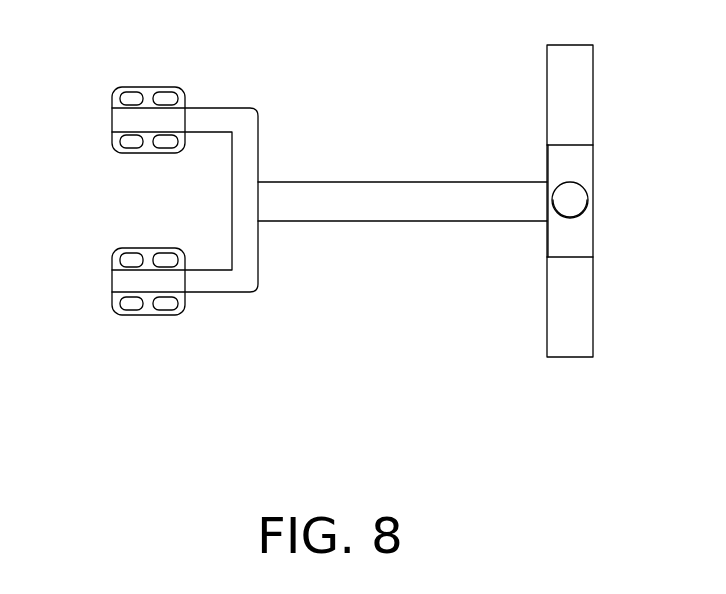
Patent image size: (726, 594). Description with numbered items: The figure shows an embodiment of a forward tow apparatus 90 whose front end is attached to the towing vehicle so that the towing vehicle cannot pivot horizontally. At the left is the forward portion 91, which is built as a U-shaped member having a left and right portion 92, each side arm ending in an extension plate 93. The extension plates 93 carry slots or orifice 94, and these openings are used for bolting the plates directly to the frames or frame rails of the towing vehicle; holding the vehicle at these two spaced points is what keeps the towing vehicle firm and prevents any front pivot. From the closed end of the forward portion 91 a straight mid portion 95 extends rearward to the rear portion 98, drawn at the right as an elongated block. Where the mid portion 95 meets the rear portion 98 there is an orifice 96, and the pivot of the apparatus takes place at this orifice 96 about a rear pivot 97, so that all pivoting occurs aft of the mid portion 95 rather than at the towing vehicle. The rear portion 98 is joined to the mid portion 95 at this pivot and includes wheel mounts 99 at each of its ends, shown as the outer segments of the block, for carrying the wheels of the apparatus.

The forward tow apparatus 90 is at (391, 312).
The forward portion 91 is at (229, 192).
The left and right portion 92 is at (208, 108).
The extension plates 93 is at (113, 93).
The slots or orifice 94 is at (128, 150).
The mid portion 95 is at (375, 182).
The orifice 96 is at (570, 218).
The rear pivot 97 is at (582, 191).
The rear portion 98 is at (545, 240).
The wheel mounts 99 is at (587, 78).